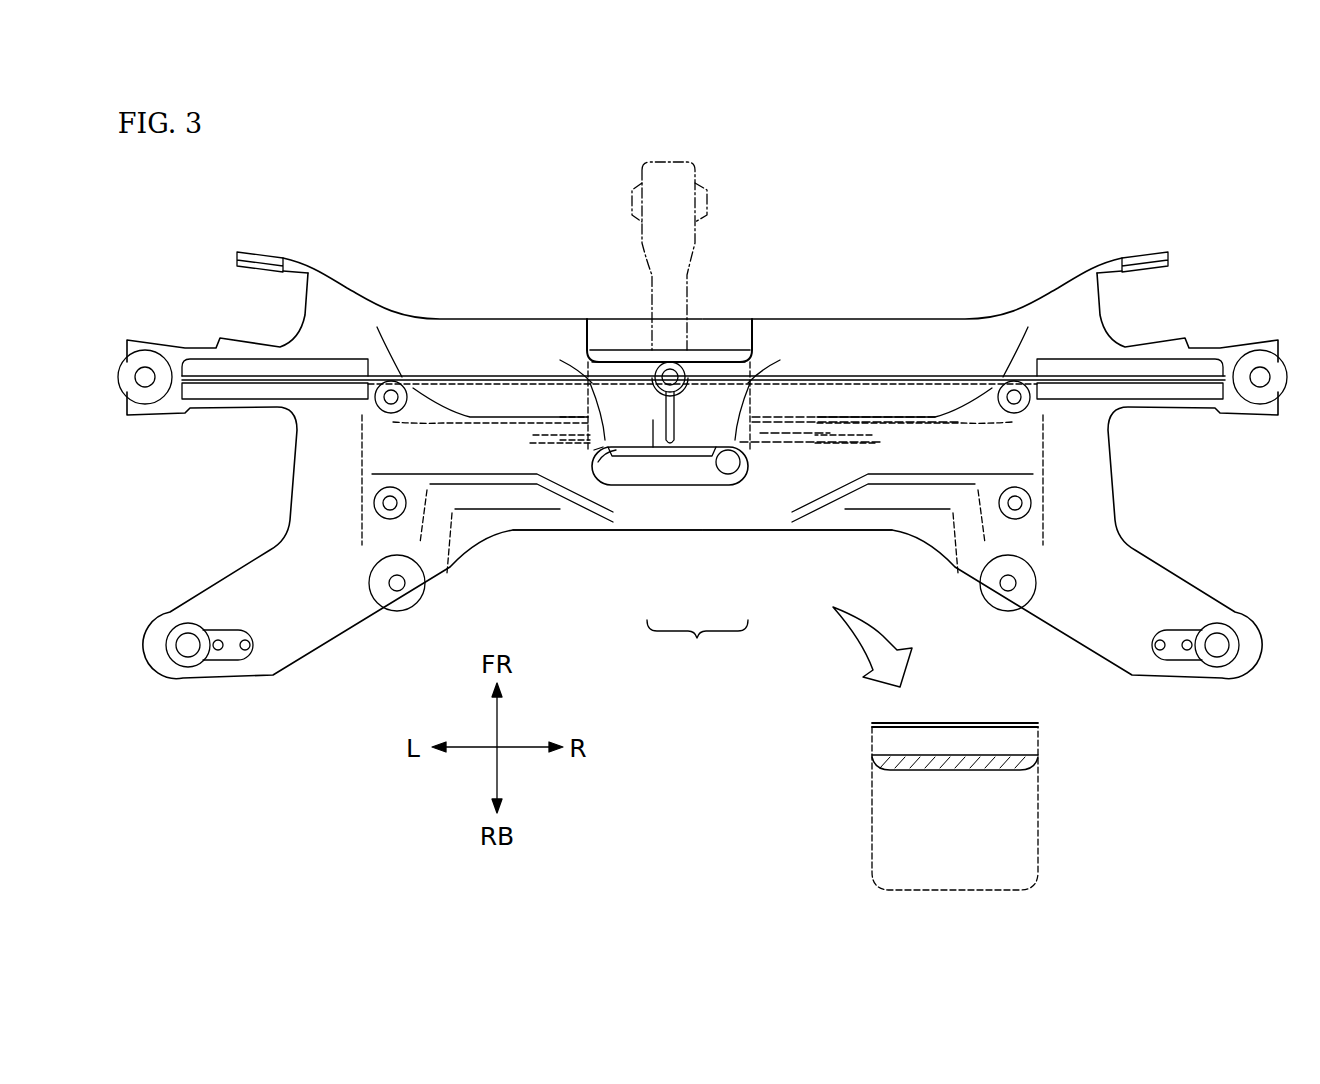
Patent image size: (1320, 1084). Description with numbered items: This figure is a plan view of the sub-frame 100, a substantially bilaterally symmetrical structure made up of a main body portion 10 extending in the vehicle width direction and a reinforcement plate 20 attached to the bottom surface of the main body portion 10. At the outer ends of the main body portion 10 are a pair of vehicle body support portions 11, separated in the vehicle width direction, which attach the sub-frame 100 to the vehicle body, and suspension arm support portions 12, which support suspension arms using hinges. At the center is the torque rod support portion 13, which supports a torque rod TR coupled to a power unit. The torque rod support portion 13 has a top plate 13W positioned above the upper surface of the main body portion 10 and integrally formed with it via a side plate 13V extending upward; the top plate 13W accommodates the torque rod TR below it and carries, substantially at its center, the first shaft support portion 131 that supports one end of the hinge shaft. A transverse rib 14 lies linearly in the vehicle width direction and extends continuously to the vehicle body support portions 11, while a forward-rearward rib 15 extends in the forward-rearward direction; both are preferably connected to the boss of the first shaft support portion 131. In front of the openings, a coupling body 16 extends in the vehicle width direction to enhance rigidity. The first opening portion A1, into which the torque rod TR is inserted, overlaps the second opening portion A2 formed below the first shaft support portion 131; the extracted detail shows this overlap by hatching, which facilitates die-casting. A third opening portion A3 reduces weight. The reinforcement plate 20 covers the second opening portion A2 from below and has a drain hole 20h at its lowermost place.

The main body portion 10 is at (683, 532).
The vehicle body support portion 11 is at (140, 340).
The suspension arm support portion 12 is at (252, 268).
The torque rod support portion 13 is at (724, 300).
The first shaft support portion 131 is at (747, 363).
The side plate 13V is at (757, 370).
The top plate 13W is at (653, 420).
The transverse rib 14 is at (460, 377).
The forward-rearward rib 15 is at (670, 363).
The coupling body 16 is at (620, 327).
The reinforcement plate 20 is at (704, 470).
The drain hole 20h is at (730, 455).
The sub-frame 100 is at (697, 650).
The first opening portion A1 is at (622, 330).
The second opening portion A2 is at (590, 362).
The third opening portion A3 is at (594, 452).
The torque rod TR is at (655, 260).